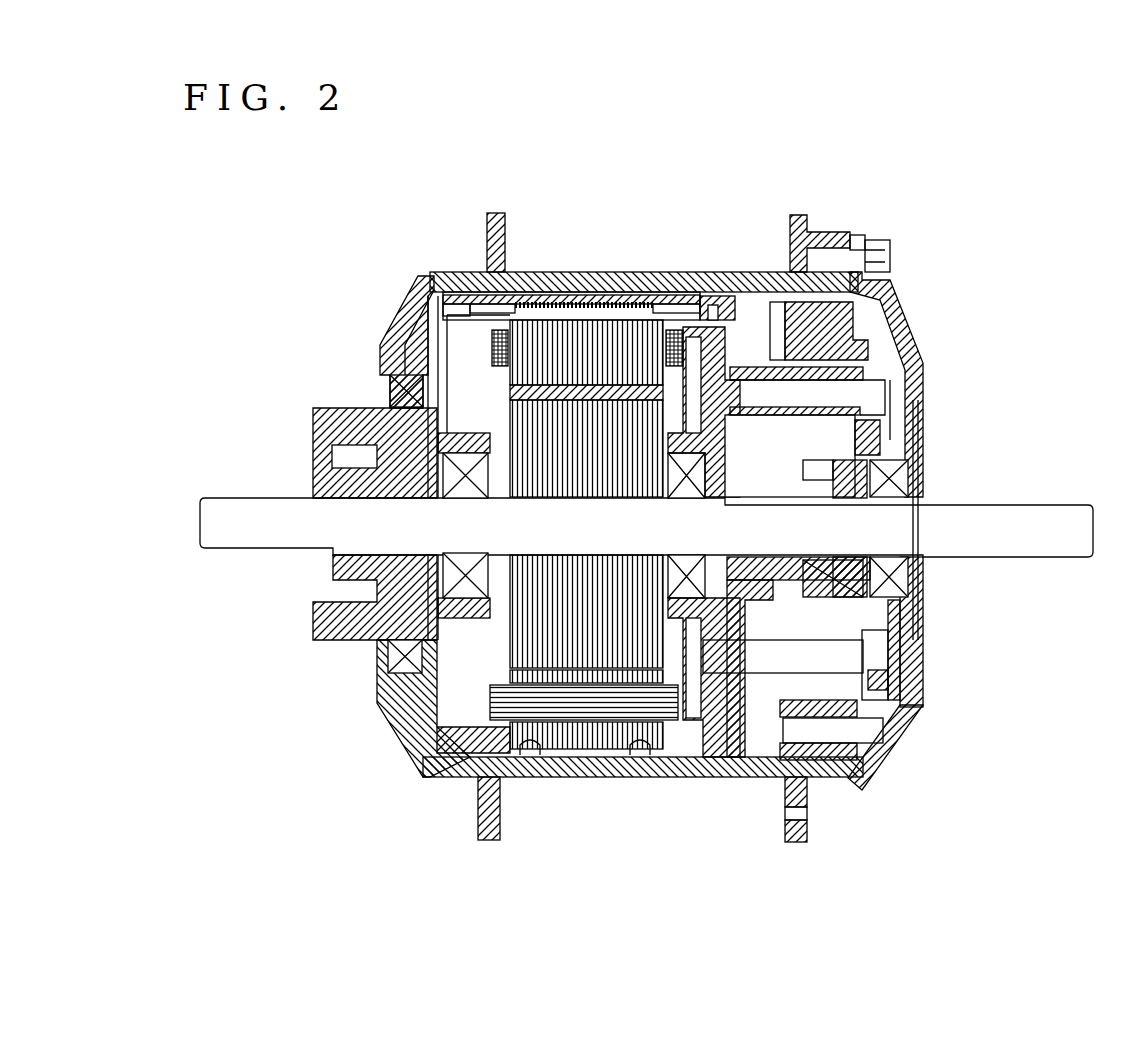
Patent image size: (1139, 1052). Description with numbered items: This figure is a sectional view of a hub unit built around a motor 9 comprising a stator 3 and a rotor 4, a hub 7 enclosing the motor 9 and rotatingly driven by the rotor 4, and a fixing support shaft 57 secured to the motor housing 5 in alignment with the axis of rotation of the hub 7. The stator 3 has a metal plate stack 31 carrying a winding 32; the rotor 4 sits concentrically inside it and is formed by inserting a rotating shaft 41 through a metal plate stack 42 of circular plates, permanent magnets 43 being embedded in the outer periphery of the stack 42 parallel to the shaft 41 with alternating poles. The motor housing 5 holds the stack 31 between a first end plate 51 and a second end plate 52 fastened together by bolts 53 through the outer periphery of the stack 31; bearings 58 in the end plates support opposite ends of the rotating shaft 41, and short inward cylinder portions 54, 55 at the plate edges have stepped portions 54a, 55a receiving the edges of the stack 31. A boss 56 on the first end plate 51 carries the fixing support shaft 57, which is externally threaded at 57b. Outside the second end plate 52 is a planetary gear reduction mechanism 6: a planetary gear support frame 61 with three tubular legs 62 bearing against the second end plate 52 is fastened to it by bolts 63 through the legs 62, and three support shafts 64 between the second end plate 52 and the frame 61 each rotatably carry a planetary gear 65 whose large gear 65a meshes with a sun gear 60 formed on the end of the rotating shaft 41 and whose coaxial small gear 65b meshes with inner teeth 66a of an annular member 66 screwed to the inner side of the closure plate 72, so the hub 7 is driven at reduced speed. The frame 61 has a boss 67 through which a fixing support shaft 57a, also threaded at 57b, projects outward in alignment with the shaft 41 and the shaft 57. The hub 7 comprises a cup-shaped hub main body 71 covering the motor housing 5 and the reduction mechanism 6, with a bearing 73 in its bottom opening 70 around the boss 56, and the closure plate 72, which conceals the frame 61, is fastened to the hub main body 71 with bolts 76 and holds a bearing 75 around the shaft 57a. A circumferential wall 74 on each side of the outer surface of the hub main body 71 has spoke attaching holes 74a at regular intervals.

The stator 3 is at (680, 197).
The metal plate stack 31 is at (607, 322).
The winding 32 is at (512, 392).
The rotor 4 is at (363, 220).
The rotating shaft 41 is at (420, 375).
The metal plate stack 42 is at (432, 340).
The permanent magnets 43 is at (500, 413).
The motor housing 5 is at (550, 104).
The first end plate 51 is at (457, 290).
The second end plate 52 is at (695, 293).
The bolts 53 is at (673, 313).
The short cylinder portion 54 is at (467, 738).
The stepped portion 54a is at (530, 757).
The short cylinder portion 55 is at (660, 745).
The stepped portion 55a is at (618, 745).
The boss 56 is at (357, 572).
The fixing support shaft 57 is at (270, 532).
The fixing support shaft 57a is at (1038, 522).
The external thread 57b is at (227, 550).
The bearings 58 is at (462, 600).
The planetary gear reduction mechanism 6 is at (785, 585).
The sun gear 60 is at (752, 497).
The planetary gear support frame 61 is at (833, 392).
The tubular legs 62 is at (772, 362).
The bolts 63 is at (872, 356).
The support shafts 64 is at (900, 640).
The planetary gear 65 is at (762, 690).
The large gear 65a is at (745, 730).
The small gear 65b is at (880, 605).
The annular member 66 is at (835, 718).
The inner teeth 66a is at (857, 708).
The boss 67 is at (917, 440).
The hub 7 is at (790, 115).
The bottom opening 70 is at (388, 385).
The hub main body 71 is at (742, 268).
The closure plate 72 is at (905, 300).
The bearing 73 is at (395, 660).
The circumferential wall 74 is at (497, 223).
The spoke attaching holes 74a is at (800, 815).
The bearing 75 is at (897, 582).
The bolts 76 is at (882, 250).
The motor 9 is at (483, 687).